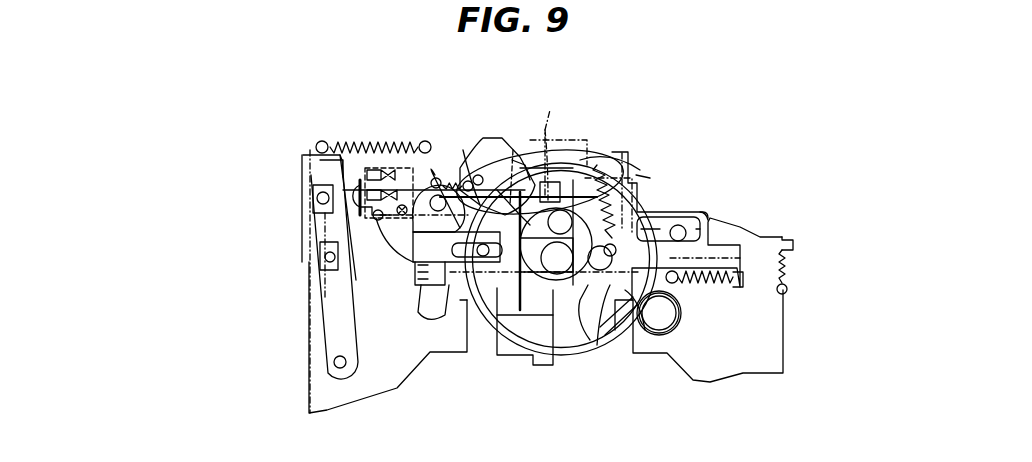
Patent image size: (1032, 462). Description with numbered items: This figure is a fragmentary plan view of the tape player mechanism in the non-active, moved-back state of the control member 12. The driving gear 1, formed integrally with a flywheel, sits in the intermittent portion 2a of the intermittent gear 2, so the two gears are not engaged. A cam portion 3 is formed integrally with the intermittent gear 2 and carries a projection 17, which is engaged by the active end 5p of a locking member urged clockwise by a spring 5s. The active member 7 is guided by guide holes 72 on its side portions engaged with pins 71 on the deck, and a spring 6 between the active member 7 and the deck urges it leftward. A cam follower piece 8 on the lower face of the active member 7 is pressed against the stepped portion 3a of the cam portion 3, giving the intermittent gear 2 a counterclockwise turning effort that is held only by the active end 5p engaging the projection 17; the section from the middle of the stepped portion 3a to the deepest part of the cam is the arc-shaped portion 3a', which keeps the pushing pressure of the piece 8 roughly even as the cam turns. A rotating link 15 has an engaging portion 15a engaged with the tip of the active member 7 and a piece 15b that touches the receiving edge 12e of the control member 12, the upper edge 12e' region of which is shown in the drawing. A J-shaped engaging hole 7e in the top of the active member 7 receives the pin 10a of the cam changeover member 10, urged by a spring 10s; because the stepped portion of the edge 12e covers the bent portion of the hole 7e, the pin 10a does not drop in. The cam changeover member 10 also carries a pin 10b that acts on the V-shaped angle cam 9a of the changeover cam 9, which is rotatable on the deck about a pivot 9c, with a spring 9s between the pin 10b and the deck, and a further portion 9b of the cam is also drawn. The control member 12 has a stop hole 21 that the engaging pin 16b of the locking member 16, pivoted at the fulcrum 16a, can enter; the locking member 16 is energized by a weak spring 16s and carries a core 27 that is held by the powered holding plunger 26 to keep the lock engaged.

The driving gear 1 is at (672, 325).
The intermittent gear 2 is at (655, 182).
The intermittent portion 2a is at (682, 314).
The cam portion 3 is at (592, 145).
The stepped portion 3a is at (560, 244).
The arc-shaped portion 3a' is at (525, 349).
The active end 5p is at (636, 345).
The spring 5s is at (790, 269).
The spring 6 is at (725, 283).
The active member 7 is at (656, 236).
The engaging hole 7e is at (598, 145).
The cam follower piece 8 is at (612, 325).
The changeover cam 9 is at (486, 150).
The V-shaped angle cam 9a is at (486, 300).
The projection 9b is at (526, 150).
The pivot 9c is at (515, 145).
The spring 9s is at (415, 266).
The cam changeover member 10 is at (623, 135).
The pin 10a is at (650, 148).
The pin 10b is at (464, 150).
The spring 10s is at (619, 257).
The control member 12 is at (552, 140).
The receiving edge 12e is at (290, 196).
The edge 12e' is at (702, 144).
The rotating link 15 is at (432, 185).
The engaging portion 15a is at (422, 288).
The piece 15b is at (440, 197).
The locking member 16 is at (325, 313).
The fulcrum 16a is at (336, 362).
The engaging pin 16b is at (327, 257).
The spring 16s is at (372, 165).
The projection 17 is at (585, 300).
The stop hole 21 is at (305, 234).
The holding plunger 26 is at (345, 145).
The core 27 is at (305, 193).
The pins 71 is at (692, 218).
The guide holes 72 is at (462, 352).